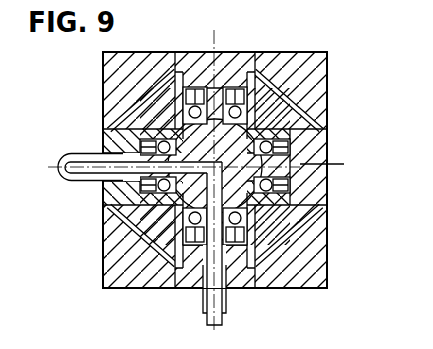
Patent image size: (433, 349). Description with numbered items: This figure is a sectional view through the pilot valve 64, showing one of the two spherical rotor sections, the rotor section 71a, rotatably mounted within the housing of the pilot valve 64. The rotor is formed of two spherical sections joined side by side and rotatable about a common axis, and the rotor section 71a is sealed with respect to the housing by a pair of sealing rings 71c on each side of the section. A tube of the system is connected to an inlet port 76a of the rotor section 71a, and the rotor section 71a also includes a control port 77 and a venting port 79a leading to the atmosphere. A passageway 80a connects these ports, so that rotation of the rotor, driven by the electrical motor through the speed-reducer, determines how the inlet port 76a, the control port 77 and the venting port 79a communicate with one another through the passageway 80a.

The pilot valve 64 is at (286, 42).
The spherical rotor section 71a is at (250, 136).
The sealing rings 71c is at (242, 113).
The inlet port 76a is at (82, 158).
The control port 77 is at (223, 298).
The venting port 79a is at (326, 162).
The passageway 80a is at (168, 208).